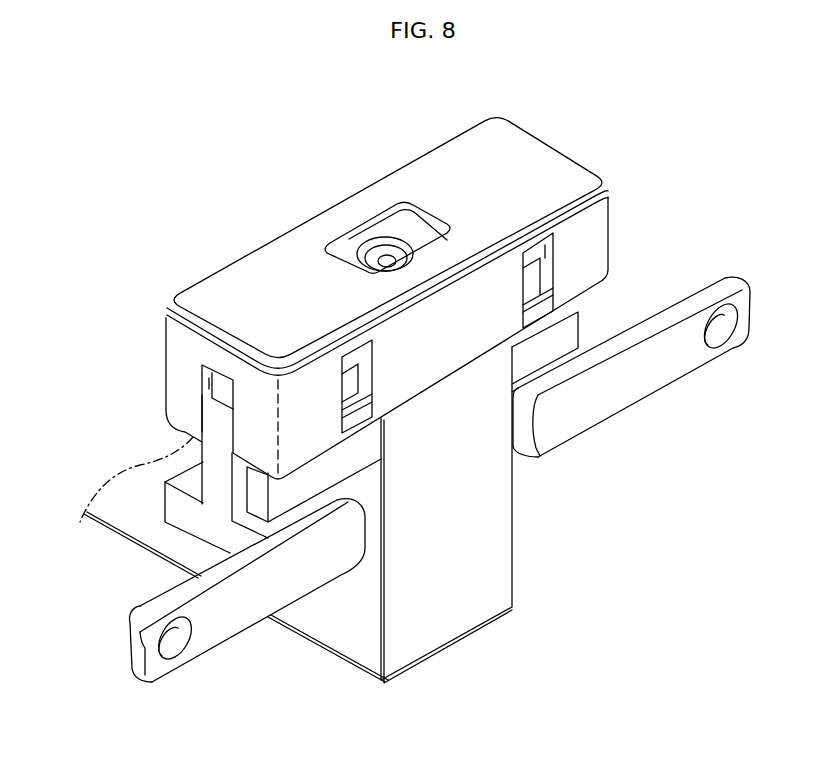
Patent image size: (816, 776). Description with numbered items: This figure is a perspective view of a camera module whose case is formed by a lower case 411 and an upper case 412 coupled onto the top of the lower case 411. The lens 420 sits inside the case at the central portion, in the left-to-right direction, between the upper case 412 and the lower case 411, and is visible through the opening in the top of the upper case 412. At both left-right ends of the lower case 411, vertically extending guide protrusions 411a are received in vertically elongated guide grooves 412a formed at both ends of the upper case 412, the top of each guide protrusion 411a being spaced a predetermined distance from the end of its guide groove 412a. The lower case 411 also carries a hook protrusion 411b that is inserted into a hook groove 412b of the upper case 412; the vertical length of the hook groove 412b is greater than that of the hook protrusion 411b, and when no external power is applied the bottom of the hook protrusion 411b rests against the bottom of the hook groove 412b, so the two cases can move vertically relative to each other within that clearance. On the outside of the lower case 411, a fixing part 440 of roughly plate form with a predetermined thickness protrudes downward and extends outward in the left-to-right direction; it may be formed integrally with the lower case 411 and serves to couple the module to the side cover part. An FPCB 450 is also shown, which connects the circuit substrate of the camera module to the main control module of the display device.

The lower case 411 is at (555, 335).
The guide protrusion 411a is at (210, 430).
The hook protrusion 411b is at (547, 305).
The upper case 412 is at (557, 172).
The guide groove 412a is at (209, 390).
The hook groove 412b is at (543, 260).
The lens 420 is at (383, 243).
The fixing part 440 is at (590, 408).
The FPCB 450 is at (430, 602).